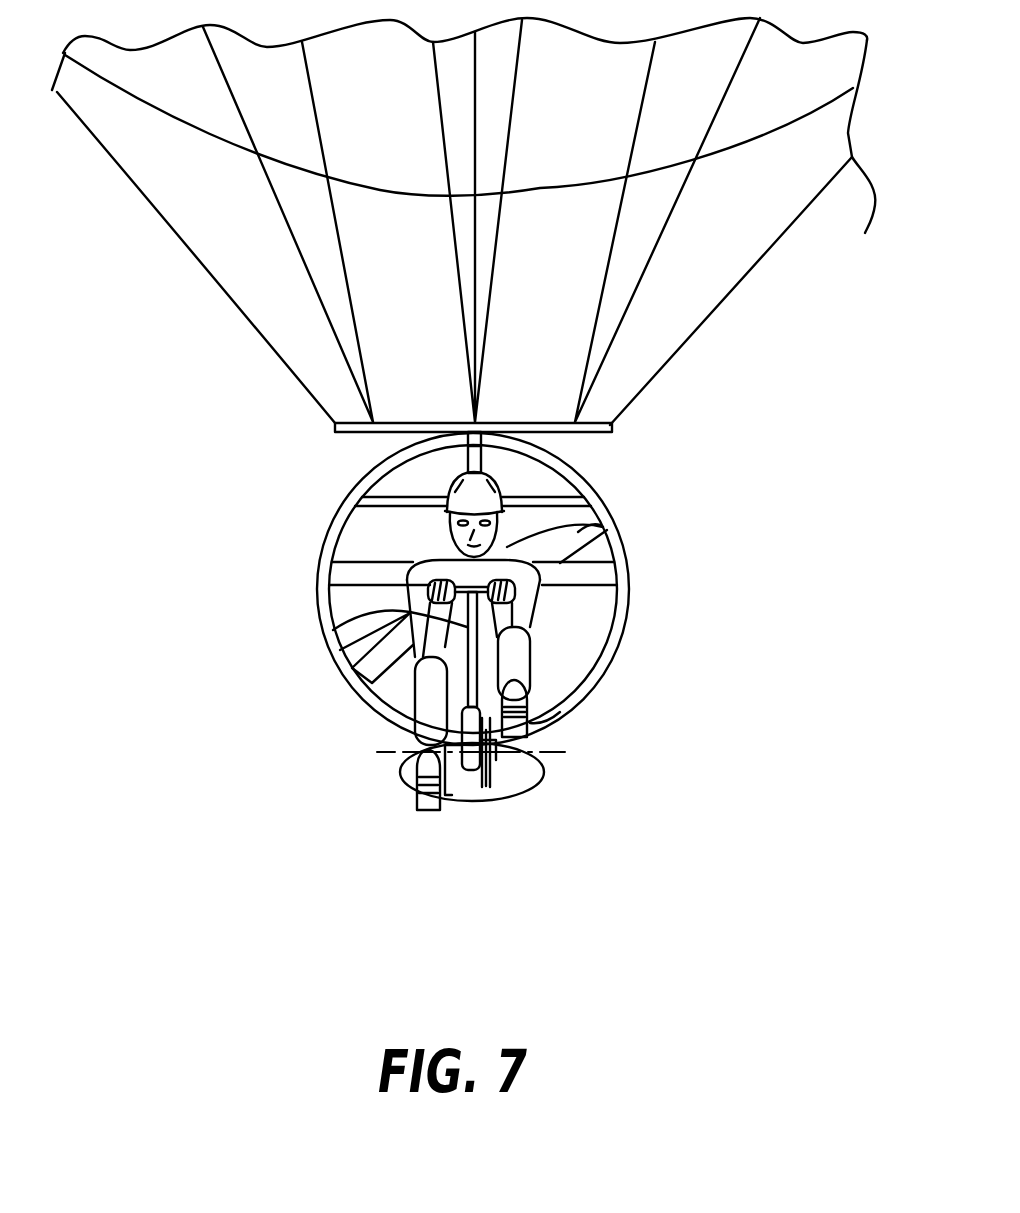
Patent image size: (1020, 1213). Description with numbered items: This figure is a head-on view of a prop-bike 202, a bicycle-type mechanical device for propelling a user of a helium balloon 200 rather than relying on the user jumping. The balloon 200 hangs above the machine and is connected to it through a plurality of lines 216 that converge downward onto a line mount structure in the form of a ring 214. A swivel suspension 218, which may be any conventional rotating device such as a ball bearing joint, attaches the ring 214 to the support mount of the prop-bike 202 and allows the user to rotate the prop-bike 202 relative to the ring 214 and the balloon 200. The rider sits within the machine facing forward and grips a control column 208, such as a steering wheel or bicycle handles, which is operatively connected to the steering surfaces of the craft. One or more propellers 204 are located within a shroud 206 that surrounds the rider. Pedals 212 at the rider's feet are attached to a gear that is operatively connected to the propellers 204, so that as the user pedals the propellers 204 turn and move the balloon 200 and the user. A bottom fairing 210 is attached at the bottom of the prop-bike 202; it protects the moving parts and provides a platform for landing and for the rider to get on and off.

The helium balloon 200 is at (613, 101).
The lines 216 is at (457, 284).
The ring 214 is at (607, 433).
The swivel suspension 218 is at (380, 465).
The prop-bike 202 is at (316, 523).
The shroud 206 is at (622, 577).
The propellers 204 is at (600, 523).
The control column 208 is at (330, 627).
The pedals 212 is at (530, 723).
The bottom fairing 210 is at (400, 763).